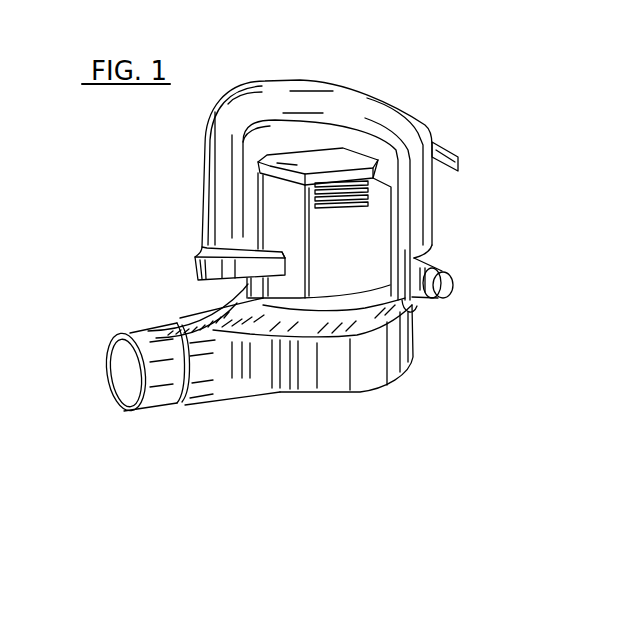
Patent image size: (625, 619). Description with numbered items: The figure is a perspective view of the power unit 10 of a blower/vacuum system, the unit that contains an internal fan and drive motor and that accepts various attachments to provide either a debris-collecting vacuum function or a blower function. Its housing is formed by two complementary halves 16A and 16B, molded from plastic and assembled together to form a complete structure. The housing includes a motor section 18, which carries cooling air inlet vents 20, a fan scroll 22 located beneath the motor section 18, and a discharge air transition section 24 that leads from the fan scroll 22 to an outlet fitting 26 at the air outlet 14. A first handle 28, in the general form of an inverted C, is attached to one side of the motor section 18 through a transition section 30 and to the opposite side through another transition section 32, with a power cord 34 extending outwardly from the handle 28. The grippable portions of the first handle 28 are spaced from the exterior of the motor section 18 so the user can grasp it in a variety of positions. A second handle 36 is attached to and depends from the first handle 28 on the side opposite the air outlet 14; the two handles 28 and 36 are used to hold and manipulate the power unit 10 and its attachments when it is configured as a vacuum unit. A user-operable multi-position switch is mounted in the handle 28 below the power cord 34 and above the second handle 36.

The power unit 10 is at (468, 78).
The air outlet 14 is at (131, 378).
The housing half 16A is at (216, 312).
The housing half 16B is at (262, 318).
The motor section 18 is at (321, 148).
The cooling air inlet vents 20 is at (347, 198).
The fan scroll 22 is at (363, 368).
The discharge air transition section 24 is at (222, 367).
The outlet fitting 26 is at (147, 345).
The first handle 28 is at (326, 98).
The transition section 30 is at (264, 270).
The transition section 32 is at (414, 247).
The power cord 34 is at (456, 160).
The second handle 36 is at (446, 285).